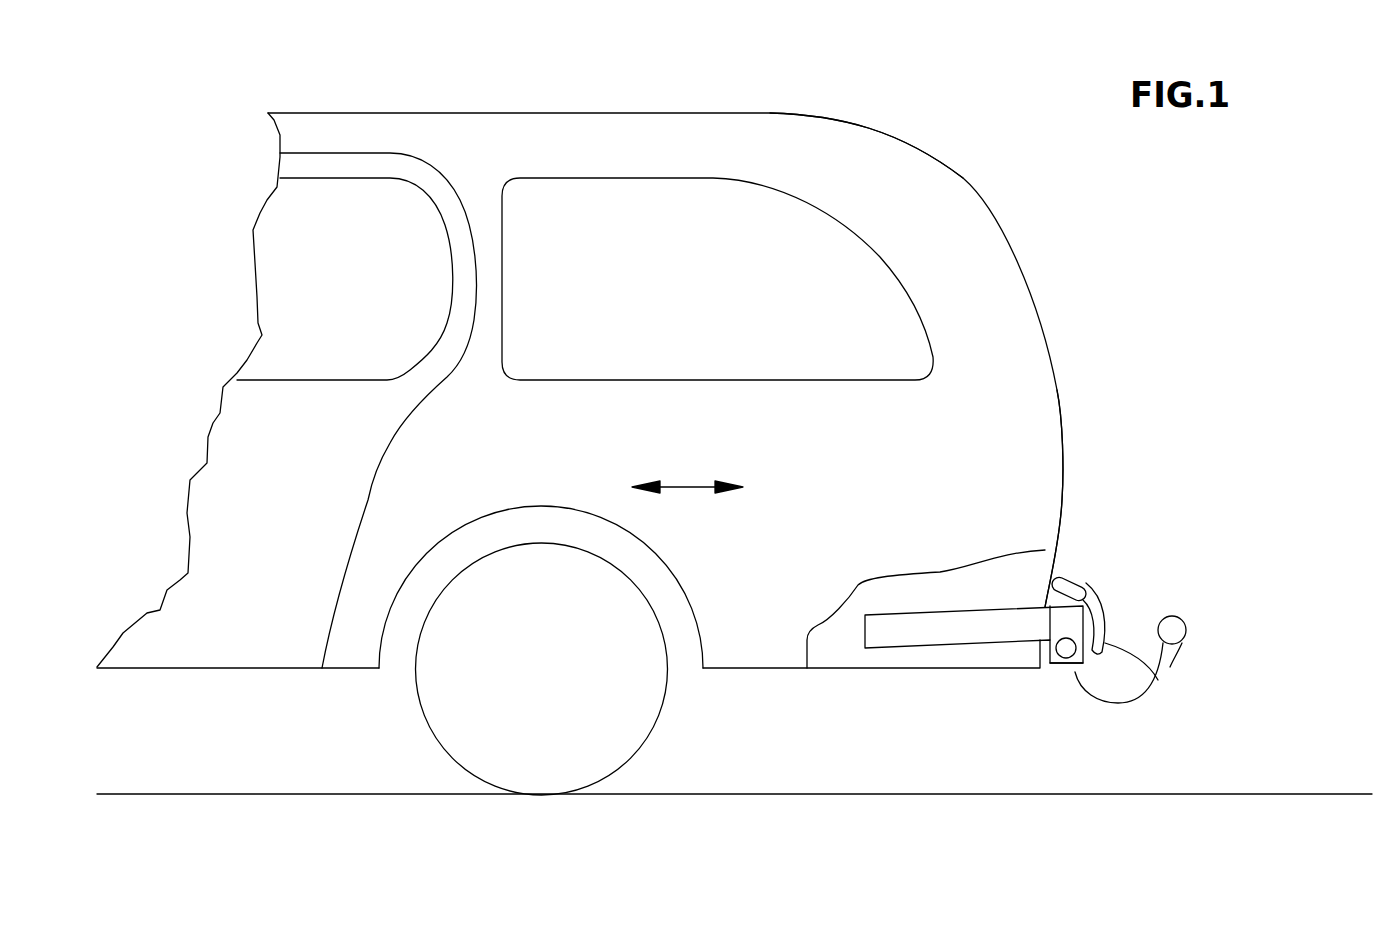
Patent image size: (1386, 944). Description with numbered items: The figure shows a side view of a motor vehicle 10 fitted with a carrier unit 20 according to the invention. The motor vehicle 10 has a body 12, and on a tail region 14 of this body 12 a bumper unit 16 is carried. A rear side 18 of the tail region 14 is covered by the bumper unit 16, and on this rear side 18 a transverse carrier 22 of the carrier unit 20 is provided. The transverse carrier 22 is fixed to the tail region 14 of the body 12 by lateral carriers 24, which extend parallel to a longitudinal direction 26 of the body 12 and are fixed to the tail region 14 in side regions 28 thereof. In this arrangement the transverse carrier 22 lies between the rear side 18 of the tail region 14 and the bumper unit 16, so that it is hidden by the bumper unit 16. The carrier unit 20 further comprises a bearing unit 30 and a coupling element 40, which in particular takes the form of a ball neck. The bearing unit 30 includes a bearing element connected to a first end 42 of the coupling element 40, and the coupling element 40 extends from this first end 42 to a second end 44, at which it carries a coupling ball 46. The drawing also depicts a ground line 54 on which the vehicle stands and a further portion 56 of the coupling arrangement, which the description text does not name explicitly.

The motor vehicle 10 is at (508, 88).
The body 12 is at (888, 168).
The tail region 14 is at (1037, 412).
The bumper unit 16 is at (1070, 582).
The rear side 18 is at (1062, 696).
The carrier unit 20 is at (1023, 672).
The transverse carrier 22 is at (1100, 607).
The lateral carriers 24 is at (945, 648).
The longitudinal direction 26 is at (685, 487).
The side regions 28 is at (888, 657).
The bearing unit 30 is at (1055, 665).
The coupling element 40 is at (1139, 704).
The first end 42 is at (1075, 672).
The second end 44 is at (1170, 667).
The coupling ball 46 is at (1186, 630).
The ground 54 is at (1333, 793).
The arm segment 56 is at (1158, 680).